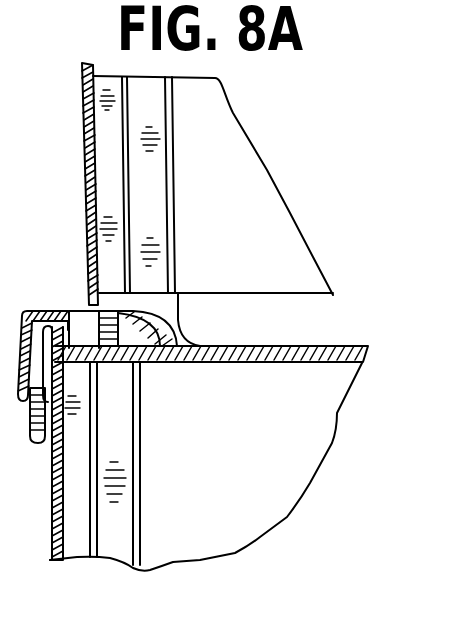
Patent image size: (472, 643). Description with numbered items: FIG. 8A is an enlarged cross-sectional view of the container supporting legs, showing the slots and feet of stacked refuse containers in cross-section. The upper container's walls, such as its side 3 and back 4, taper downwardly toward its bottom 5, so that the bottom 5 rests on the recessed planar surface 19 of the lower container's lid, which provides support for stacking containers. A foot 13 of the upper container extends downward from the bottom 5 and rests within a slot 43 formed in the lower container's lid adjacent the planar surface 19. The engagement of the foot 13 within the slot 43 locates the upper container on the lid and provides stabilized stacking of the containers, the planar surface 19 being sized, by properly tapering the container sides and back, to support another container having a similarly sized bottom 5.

The side 3 is at (84, 200).
The back 4 is at (260, 192).
The bottom 5 is at (238, 345).
The feet 13 is at (138, 360).
The recessed planar surface 19 is at (347, 345).
The slots 43 is at (77, 322).